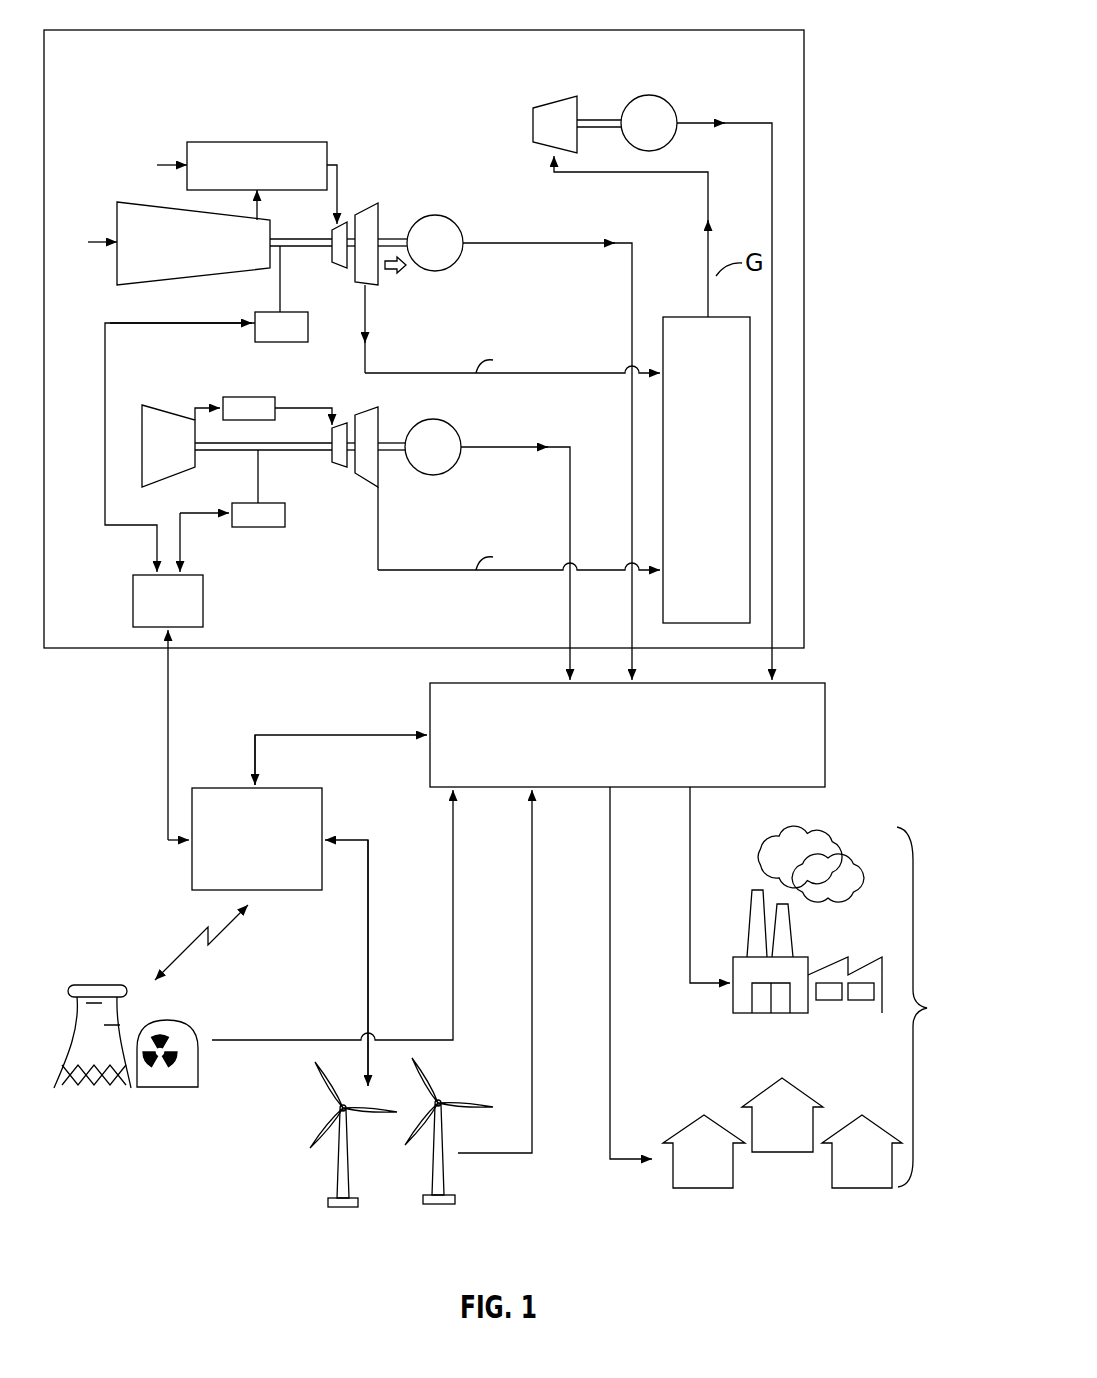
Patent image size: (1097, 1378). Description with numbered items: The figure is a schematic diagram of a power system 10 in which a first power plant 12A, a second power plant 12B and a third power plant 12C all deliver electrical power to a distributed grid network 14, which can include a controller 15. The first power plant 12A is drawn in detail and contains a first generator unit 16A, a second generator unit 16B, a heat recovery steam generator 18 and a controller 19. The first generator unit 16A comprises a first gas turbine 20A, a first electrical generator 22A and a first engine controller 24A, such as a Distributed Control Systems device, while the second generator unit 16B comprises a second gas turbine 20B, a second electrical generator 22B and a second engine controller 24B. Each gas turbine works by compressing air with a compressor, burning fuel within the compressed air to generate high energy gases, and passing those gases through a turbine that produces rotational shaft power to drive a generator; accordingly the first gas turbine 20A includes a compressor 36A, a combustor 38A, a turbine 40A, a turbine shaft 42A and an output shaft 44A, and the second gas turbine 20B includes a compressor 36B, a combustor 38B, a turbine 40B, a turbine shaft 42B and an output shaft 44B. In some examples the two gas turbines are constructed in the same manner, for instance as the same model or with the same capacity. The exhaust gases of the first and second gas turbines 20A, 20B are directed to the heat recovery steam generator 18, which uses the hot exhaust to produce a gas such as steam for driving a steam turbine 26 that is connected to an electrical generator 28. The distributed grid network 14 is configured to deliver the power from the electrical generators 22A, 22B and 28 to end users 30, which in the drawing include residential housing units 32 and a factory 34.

The power system 10 is at (858, 29).
The first power plant 12A is at (804, 108).
The power plant 12B is at (206, 1007).
The power plant 12C is at (322, 1176).
The distributed grid network 14 is at (825, 736).
The controller 15 is at (322, 806).
The first generator unit 16A is at (399, 129).
The second generator unit 16B is at (449, 481).
The heat recovery steam generator 18 is at (690, 317).
The controller 19 is at (133, 600).
The first gas turbine 20A is at (232, 282).
The second gas turbine 20B is at (321, 481).
The first electrical generator 22A is at (458, 226).
The second electrical generator 22B is at (431, 420).
The first engine controller 24A is at (283, 342).
The second engine controller 24B is at (262, 527).
The steam turbine 26 is at (549, 104).
The electrical generator 28 is at (651, 96).
The end users 30 is at (814, 1029).
The residential housing units 32 is at (772, 1199).
The factory 34 is at (745, 1013).
The compressor 36A is at (117, 205).
The compressor 36B is at (148, 410).
The combustor 38A is at (252, 142).
The combustor 38B is at (252, 397).
The turbine 40A is at (333, 258).
The turbine 40B is at (345, 427).
The turbine shaft 42A is at (308, 239).
The turbine shaft 42B is at (210, 452).
The output shaft 44A is at (379, 235).
The output shaft 44B is at (390, 445).